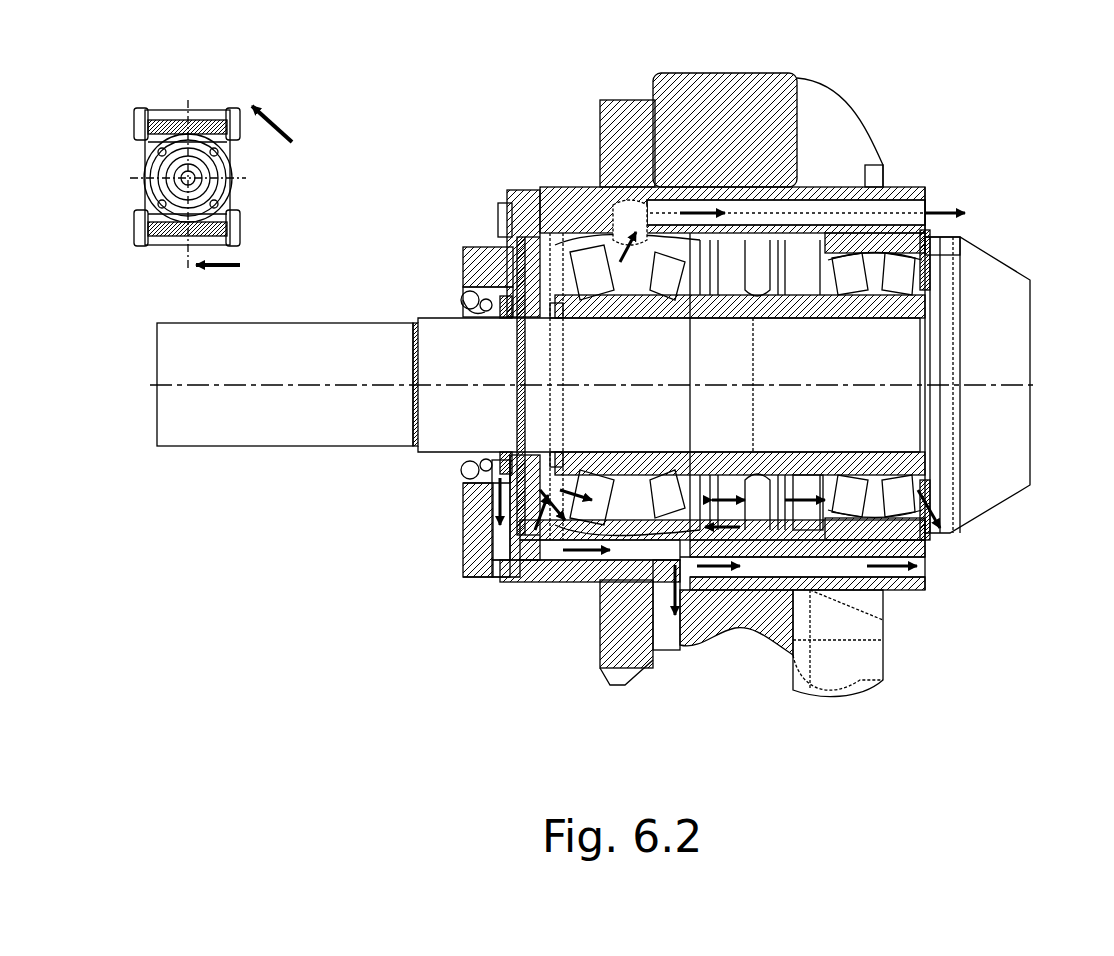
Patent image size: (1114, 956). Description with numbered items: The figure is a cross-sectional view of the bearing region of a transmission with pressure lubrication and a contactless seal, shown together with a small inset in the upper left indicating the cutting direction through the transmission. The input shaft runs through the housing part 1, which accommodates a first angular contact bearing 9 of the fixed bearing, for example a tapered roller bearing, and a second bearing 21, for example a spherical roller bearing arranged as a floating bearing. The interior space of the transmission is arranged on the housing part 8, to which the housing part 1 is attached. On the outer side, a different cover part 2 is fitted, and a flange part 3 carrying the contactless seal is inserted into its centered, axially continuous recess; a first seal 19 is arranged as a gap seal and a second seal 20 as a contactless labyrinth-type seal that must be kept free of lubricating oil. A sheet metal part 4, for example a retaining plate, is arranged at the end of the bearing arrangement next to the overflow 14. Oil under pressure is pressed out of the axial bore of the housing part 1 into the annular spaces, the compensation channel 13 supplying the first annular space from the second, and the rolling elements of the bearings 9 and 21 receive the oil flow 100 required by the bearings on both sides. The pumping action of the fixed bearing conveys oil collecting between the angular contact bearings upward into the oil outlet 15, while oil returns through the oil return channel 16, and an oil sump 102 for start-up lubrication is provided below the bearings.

The housing part 1 is at (783, 187).
The cover part 2 is at (507, 260).
The flange part 3 is at (460, 302).
The sheet metal part 4 is at (927, 503).
The housing part 8 is at (770, 126).
The bearing 9 is at (552, 482).
The compensation channel 13 is at (585, 527).
The overflow 14 is at (923, 495).
The oil outlet 15 is at (735, 203).
The oil return channel 16 is at (498, 543).
The first seal 19 is at (505, 306).
The second seal 20 is at (478, 307).
The bearing 21 is at (898, 272).
The oil flow required by bearing 100 is at (628, 230).
The oil sump for start-up lubrication 102 is at (800, 517).